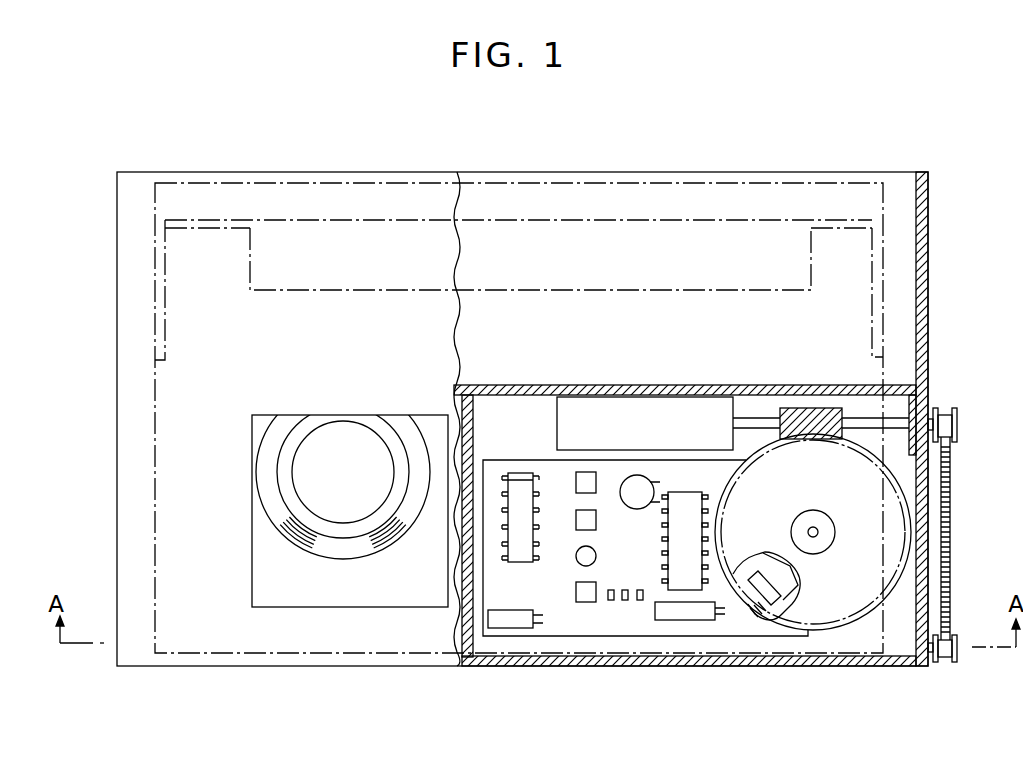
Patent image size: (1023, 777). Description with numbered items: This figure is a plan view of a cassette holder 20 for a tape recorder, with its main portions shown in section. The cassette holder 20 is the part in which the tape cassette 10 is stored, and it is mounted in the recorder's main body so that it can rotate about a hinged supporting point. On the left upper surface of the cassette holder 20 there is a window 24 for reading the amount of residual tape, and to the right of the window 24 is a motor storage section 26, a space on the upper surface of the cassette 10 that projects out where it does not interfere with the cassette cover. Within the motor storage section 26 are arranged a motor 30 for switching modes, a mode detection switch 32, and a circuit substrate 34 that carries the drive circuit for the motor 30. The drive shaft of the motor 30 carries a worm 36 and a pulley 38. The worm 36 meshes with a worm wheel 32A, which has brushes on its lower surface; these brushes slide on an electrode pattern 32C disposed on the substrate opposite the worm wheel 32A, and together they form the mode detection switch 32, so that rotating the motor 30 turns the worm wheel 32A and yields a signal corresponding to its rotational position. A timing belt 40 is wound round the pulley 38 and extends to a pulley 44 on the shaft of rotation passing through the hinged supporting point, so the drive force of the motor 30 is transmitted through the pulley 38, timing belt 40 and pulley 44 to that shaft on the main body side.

The tape cassette 10 is at (155, 498).
The cassette holder 20 is at (112, 441).
The window 24 is at (263, 566).
The motor storage section 26 is at (658, 638).
The motor 30 is at (643, 403).
The mode detection switch 32 is at (830, 637).
The worm wheel 32A is at (847, 593).
The electrode pattern 32C is at (752, 573).
The circuit substrate 34 is at (597, 625).
The worm 36 is at (812, 406).
The pulley 38 is at (955, 408).
The timing belt 40 is at (950, 573).
The pulley 44 is at (963, 653).